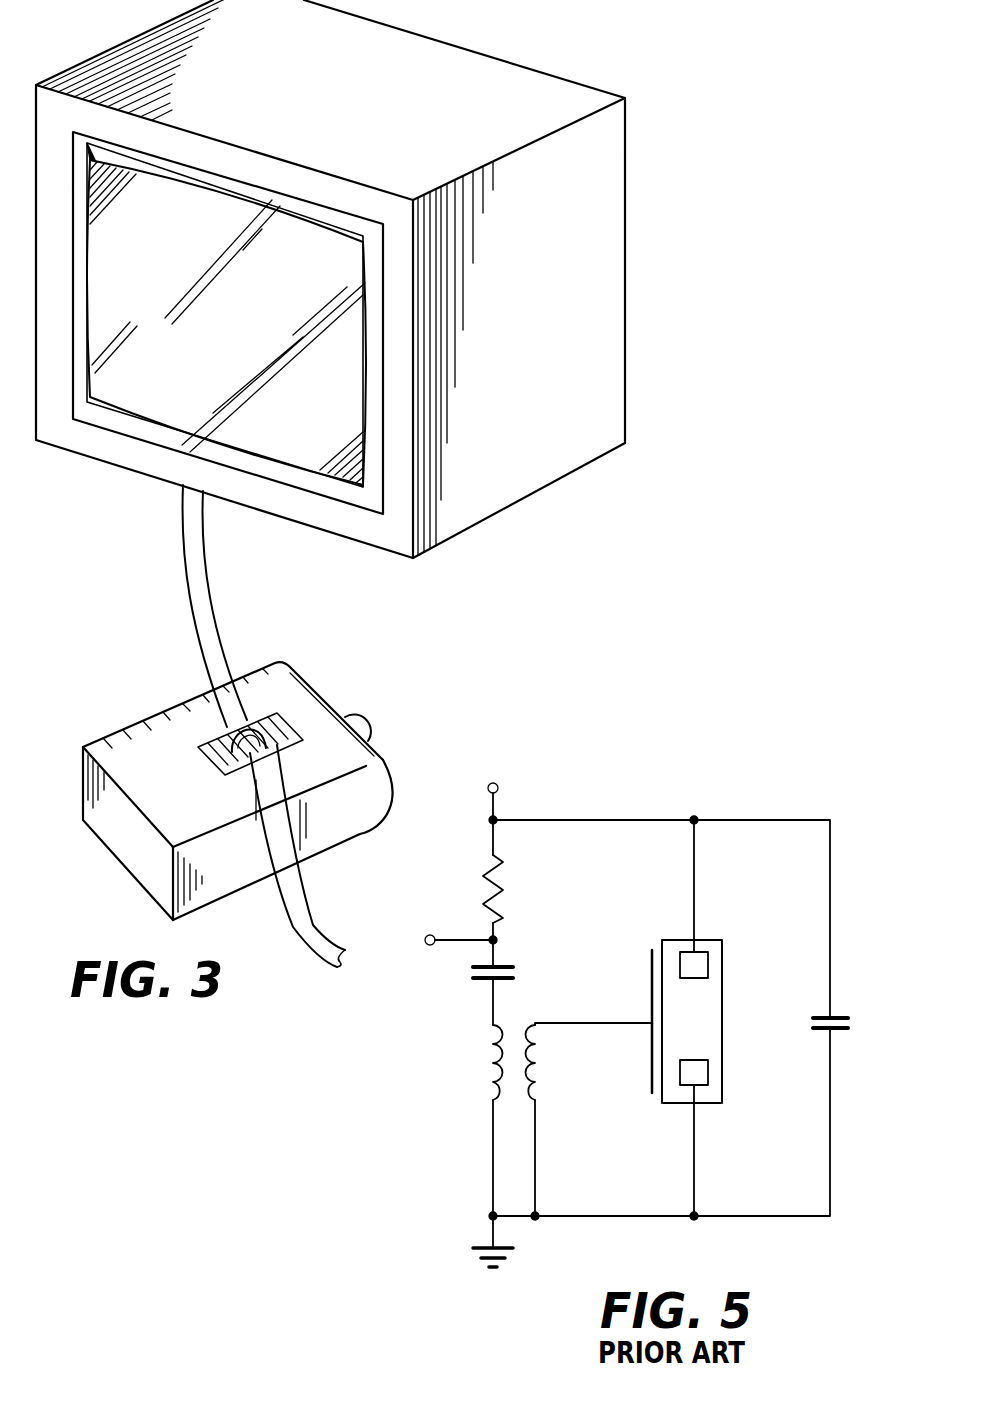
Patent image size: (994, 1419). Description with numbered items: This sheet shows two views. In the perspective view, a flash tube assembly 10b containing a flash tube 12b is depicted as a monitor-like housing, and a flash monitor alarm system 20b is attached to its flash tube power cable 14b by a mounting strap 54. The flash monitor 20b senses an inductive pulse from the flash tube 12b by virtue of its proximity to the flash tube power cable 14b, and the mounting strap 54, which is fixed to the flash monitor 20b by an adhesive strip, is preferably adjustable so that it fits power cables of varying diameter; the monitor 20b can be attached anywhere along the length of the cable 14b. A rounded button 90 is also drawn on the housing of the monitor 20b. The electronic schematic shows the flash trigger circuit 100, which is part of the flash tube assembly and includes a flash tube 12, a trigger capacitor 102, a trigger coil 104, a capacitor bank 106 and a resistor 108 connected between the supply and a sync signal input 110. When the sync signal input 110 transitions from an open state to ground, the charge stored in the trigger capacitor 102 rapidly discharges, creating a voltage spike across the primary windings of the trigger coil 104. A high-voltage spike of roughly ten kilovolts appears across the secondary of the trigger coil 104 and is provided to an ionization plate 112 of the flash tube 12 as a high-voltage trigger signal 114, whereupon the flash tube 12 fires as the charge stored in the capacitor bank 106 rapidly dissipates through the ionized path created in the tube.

In FIG. 3, the flash tube assembly 10b is at (98, 466).
In FIG. 3, the flash tube 12b is at (172, 423).
In FIG. 3, the flash tube power cable 14b is at (208, 642).
In FIG. 3, the flash monitor alarm system 20b is at (122, 727).
In FIG. 3, the mounting strap 54 is at (263, 723).
In FIG. 3, the button 90 is at (367, 712).
In FIG. 5, the flash trigger circuit 100 is at (718, 790).
In FIG. 5, the resistor 108 is at (501, 884).
In FIG. 5, the sync signal input 110 is at (431, 933).
In FIG. 5, the trigger capacitor 102 is at (510, 973).
In FIG. 5, the trigger coil 104 is at (517, 1093).
In FIG. 5, the high-voltage trigger signal 114 is at (609, 1022).
In FIG. 5, the ionization plate 112 is at (652, 1067).
In FIG. 5, the flash tube 12 is at (723, 955).
In FIG. 5, the capacitor bank 106 is at (813, 1023).